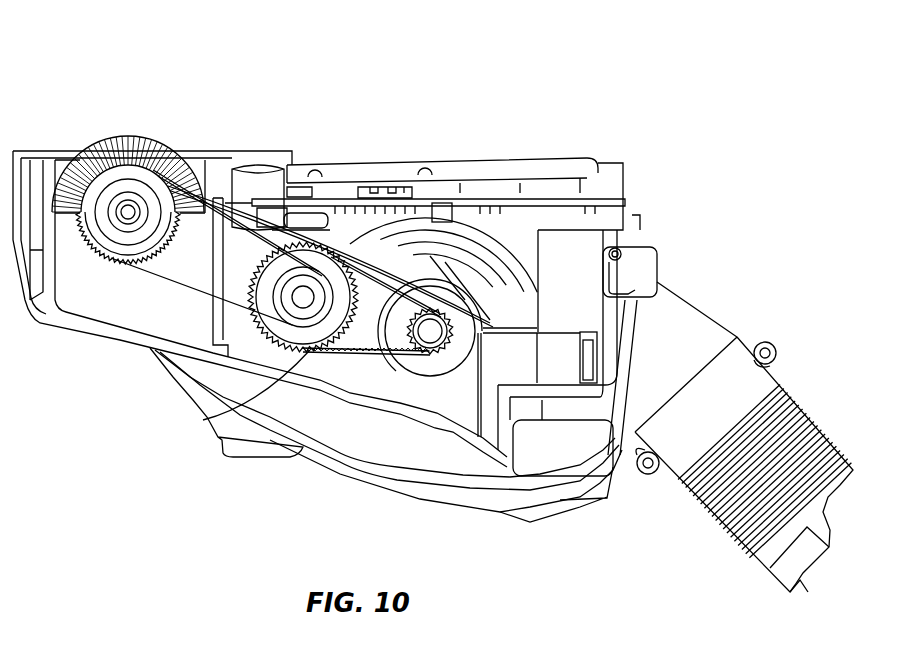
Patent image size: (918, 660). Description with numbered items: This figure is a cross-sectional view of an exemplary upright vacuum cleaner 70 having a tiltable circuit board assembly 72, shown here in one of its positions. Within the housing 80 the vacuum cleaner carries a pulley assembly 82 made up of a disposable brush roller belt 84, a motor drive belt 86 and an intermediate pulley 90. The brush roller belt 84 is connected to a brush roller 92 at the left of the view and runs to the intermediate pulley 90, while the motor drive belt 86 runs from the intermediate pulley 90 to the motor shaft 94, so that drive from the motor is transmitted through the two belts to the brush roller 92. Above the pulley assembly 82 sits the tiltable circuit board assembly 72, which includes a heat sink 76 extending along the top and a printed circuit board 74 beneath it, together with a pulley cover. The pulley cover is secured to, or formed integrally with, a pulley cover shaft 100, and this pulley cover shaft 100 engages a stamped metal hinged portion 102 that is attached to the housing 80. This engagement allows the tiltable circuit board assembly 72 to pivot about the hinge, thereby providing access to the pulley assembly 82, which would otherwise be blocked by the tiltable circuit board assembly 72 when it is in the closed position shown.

The upright vacuum cleaner 70 is at (432, 70).
The tiltable circuit board assembly 72 is at (633, 174).
The printed circuit board 74 is at (625, 200).
The heat sink 76 is at (543, 157).
The housing 80 is at (43, 325).
The pulley assembly 82 is at (207, 431).
The disposable brush roller belt 84 is at (180, 272).
The motor drive belt 86 is at (353, 355).
The intermediate pulley 90 is at (300, 318).
The brush roller 92 is at (102, 178).
The motor shaft 94 is at (431, 336).
The pulley cover shaft 100 is at (618, 251).
The stamped metal hinged portion 102 is at (612, 278).